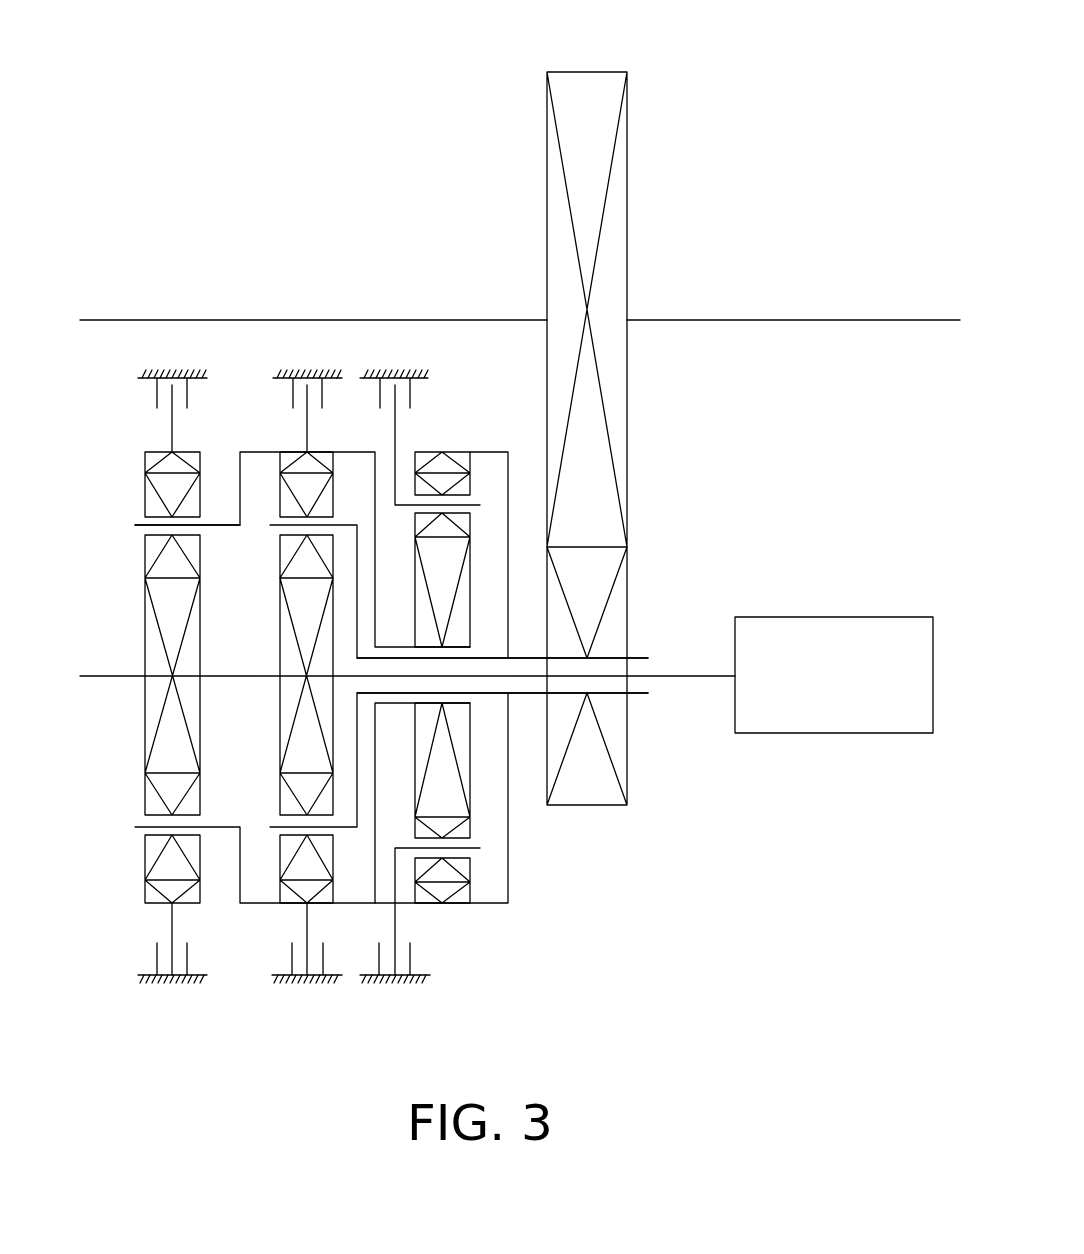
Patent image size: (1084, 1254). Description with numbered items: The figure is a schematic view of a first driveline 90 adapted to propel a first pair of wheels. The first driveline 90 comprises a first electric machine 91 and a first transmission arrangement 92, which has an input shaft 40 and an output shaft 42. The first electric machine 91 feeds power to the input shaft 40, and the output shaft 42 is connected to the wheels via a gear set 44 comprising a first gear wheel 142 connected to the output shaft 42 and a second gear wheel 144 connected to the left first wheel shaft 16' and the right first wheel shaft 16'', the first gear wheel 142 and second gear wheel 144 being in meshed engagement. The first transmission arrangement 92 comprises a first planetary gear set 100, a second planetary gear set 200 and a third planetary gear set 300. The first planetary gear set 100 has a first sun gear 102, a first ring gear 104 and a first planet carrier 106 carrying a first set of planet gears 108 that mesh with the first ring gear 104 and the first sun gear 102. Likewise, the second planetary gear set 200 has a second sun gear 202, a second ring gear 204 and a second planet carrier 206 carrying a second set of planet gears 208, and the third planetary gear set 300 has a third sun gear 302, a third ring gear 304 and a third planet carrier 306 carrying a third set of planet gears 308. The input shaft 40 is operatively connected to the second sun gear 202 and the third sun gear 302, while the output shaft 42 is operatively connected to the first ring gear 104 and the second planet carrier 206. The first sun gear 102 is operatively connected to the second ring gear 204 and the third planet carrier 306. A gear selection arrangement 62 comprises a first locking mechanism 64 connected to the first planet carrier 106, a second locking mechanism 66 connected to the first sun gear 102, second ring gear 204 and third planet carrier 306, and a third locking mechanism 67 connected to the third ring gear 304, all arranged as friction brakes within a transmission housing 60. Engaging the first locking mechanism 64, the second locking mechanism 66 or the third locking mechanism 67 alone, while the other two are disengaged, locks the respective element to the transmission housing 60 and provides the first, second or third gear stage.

The left first wheel shaft 16' is at (313, 281).
The right first wheel shaft 16'' is at (793, 281).
The input shaft 40 is at (675, 677).
The output shaft 42 is at (635, 693).
The gear set 44 is at (680, 538).
The transmission housing 60 is at (140, 978).
The gear selection arrangement 62 is at (248, 348).
The first locking mechanism 64 is at (388, 358).
The second locking mechanism 66 is at (302, 360).
The third locking mechanism 67 is at (170, 360).
The first driveline 90 is at (222, 118).
The first electric machine 91 is at (837, 735).
The first transmission arrangement 92 is at (367, 228).
The first planetary gear set 100 is at (460, 925).
The first sun gear 102 is at (470, 770).
The first ring gear 104 is at (455, 452).
The first planet carrier 106 is at (478, 848).
The first set of planet gears 108 is at (470, 868).
The first gear wheel 142 is at (630, 602).
The second gear wheel 144 is at (628, 175).
The second planetary gear set 200 is at (270, 952).
The second sun gear 202 is at (270, 713).
The second ring gear 204 is at (283, 903).
The second planet carrier 206 is at (268, 815).
The second set of planet gears 208 is at (270, 552).
The third planetary gear set 300 is at (127, 920).
The third sun gear 302 is at (142, 623).
The third ring gear 304 is at (143, 470).
The third planet carrier 306 is at (137, 527).
The third set of planet gears 308 is at (142, 845).